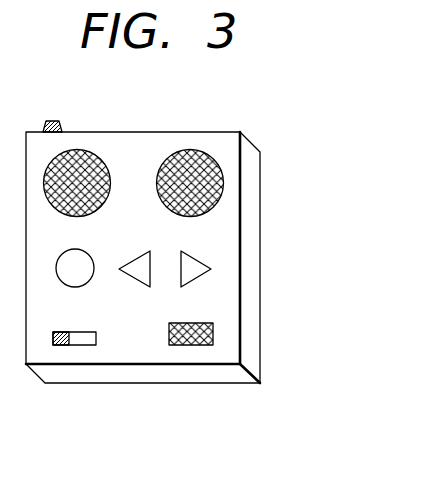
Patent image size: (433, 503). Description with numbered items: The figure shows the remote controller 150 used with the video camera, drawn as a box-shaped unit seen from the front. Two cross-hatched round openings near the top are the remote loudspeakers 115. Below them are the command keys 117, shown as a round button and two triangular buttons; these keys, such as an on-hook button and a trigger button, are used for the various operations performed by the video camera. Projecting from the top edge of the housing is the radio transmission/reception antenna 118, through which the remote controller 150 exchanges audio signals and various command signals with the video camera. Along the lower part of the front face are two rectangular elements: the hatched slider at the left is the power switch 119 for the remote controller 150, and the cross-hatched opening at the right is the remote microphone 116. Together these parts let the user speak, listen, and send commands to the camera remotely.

The remote controller 150 is at (253, 122).
The radio transmission/reception antenna 118 is at (54, 121).
The remote loudspeakers 115 is at (80, 150).
The command keys 117 is at (80, 250).
The power switch 119 is at (60, 345).
The remote microphone 116 is at (183, 345).